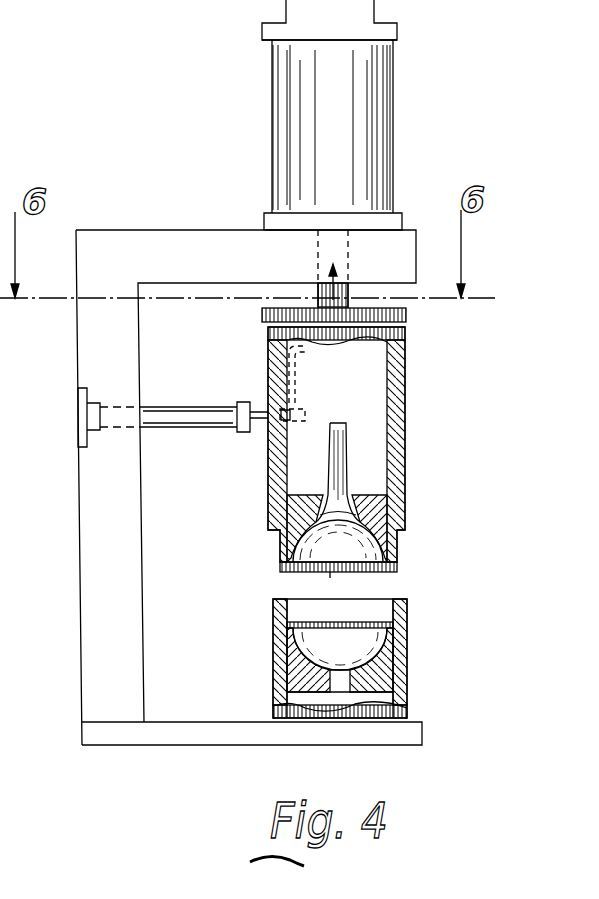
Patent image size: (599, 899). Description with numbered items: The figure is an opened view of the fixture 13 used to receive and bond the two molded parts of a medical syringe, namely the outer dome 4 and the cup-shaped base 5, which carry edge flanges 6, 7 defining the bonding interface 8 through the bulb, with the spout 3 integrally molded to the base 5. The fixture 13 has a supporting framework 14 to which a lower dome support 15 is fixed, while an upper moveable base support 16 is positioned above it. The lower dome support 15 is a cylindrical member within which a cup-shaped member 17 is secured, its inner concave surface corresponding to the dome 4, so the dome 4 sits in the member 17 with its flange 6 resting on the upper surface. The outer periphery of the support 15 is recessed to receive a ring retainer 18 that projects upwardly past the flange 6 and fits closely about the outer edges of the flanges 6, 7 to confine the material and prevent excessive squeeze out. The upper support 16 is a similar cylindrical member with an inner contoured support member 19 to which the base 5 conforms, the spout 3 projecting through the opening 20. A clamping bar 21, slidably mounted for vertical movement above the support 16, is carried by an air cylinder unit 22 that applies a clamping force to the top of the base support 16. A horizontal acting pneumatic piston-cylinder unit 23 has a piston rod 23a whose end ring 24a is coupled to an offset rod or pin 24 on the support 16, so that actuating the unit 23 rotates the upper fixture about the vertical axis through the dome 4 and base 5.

The spout 3 is at (360, 428).
The outer dome 4 is at (346, 667).
The cup-shaped base 5 is at (344, 558).
The edge flange 6 is at (407, 625).
The edge flange 7 is at (397, 566).
The bonding interface 8 is at (333, 574).
The fixture 13 is at (213, 558).
The supporting framework 14 is at (78, 530).
The lower dome support 15 is at (407, 712).
The upper moveable base support 16 is at (400, 420).
The cup-shaped member 17 is at (385, 670).
The ring retainer 18 is at (274, 604).
The contoured support member 19 is at (383, 517).
The opening 20 is at (352, 500).
The clamping bar 21 is at (406, 315).
The air cylinder unit 22 is at (393, 115).
The pneumatic piston-cylinder unit 23 is at (205, 372).
The piston rod 23a is at (265, 425).
The offset rod or pin 24 is at (300, 375).
The end ring 24a is at (305, 413).